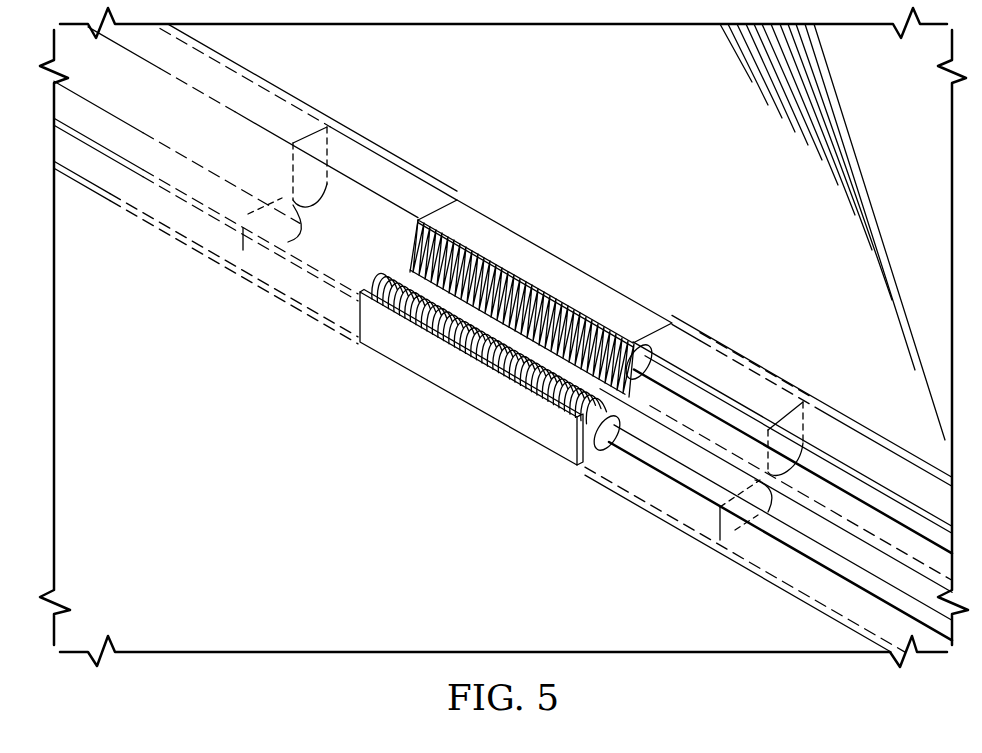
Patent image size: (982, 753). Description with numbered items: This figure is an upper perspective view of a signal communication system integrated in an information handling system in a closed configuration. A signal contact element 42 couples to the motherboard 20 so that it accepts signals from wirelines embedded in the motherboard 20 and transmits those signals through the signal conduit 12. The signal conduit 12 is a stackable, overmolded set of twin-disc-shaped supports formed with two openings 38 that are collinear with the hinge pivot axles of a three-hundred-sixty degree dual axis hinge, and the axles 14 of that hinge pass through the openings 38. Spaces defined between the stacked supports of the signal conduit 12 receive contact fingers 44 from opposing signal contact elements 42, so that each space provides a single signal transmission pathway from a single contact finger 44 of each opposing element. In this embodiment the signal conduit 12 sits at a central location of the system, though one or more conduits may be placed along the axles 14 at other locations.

The signal conduit 12 is at (655, 335).
The axles 14 is at (742, 403).
The motherboard 20 is at (732, 177).
The openings 38 is at (652, 342).
The signal contact element 42 is at (490, 228).
The contact fingers 44 is at (520, 278).